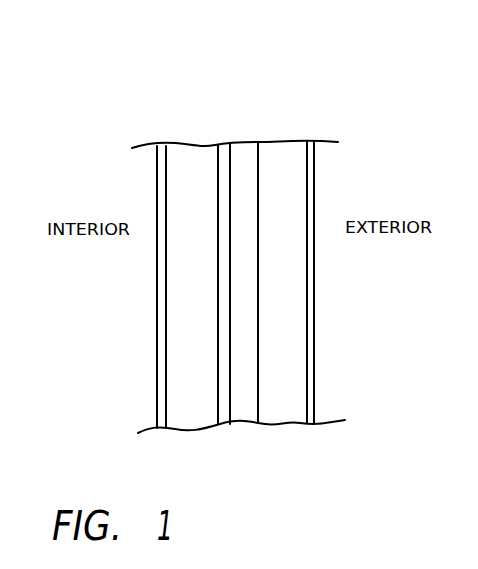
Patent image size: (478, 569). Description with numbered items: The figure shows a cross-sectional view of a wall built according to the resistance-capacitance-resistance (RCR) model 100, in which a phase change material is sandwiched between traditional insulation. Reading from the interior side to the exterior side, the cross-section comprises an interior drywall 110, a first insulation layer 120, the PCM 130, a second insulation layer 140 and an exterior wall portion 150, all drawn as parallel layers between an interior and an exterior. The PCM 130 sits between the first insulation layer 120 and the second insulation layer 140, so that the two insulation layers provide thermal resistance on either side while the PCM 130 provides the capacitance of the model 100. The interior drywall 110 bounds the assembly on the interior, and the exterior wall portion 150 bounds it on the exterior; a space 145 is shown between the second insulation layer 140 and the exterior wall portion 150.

The resistance-capacitance-resistance (RCR) model 100 is at (365, 150).
The interior drywall 110 is at (150, 178).
The first insulation layer 120 is at (190, 150).
The PCM 130 is at (227, 148).
The second insulation layer 140 is at (247, 415).
The weather resistive barrier 145 is at (300, 397).
The exterior wall portion 150 is at (319, 313).